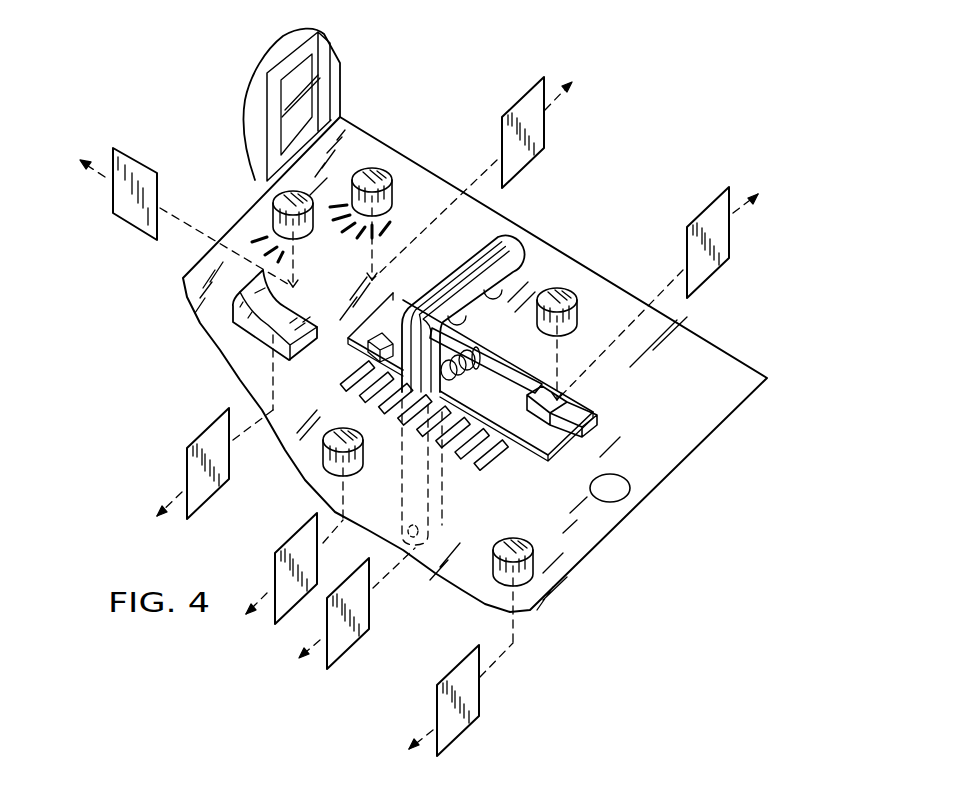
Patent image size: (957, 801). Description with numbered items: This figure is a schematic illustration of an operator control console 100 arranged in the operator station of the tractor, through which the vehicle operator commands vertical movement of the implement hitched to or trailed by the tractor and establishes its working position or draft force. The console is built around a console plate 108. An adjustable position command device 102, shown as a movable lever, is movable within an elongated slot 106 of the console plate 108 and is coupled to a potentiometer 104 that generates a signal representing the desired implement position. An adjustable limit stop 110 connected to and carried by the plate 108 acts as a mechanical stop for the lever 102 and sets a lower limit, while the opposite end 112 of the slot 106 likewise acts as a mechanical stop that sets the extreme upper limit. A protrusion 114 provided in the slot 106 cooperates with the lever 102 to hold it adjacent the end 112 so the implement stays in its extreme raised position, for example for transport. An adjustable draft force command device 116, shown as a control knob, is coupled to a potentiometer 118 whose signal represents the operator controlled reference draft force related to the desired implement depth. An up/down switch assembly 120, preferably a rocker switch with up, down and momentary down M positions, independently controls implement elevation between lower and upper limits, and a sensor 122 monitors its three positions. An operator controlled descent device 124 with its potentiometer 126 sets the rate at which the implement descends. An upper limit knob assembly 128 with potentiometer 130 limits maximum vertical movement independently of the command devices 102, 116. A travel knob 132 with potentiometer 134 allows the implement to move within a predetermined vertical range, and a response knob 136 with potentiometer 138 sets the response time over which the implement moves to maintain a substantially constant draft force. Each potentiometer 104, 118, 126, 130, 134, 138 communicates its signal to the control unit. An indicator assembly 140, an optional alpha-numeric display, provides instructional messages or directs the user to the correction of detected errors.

The operator control console 100 is at (428, 88).
The adjustable position command device 102 is at (500, 253).
The potentiometer 104 is at (370, 610).
The elongated slot 106 is at (497, 370).
The console plate 108 is at (740, 370).
The adjustable limit stop 110 is at (362, 352).
The opposite end of slot 112 is at (580, 433).
The protrusion 114 is at (560, 403).
The adjustable draft force command device 116 is at (570, 290).
The potentiometer 118 is at (733, 238).
The up/down switch assembly 120 is at (233, 328).
The sensor 122 is at (207, 508).
The operator controlled descent device 124 is at (380, 172).
The potentiometer 126 is at (547, 127).
The upper limit knob assembly 128 is at (276, 196).
The potentiometer 130 is at (140, 233).
The travel knob 132 is at (323, 445).
The potentiometer 134 is at (290, 613).
The response knob 136 is at (537, 547).
The potentiometer 138 is at (457, 733).
The indicator assembly 140 is at (308, 72).